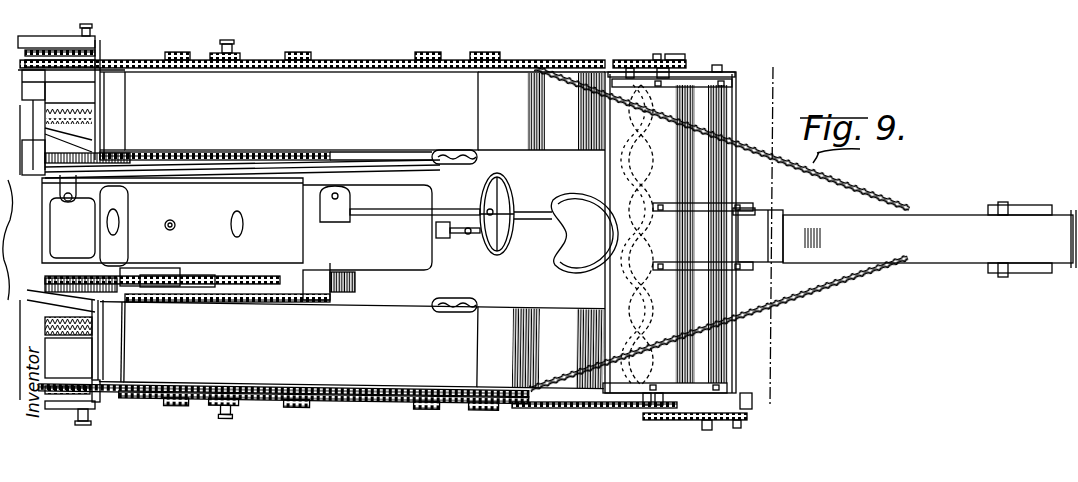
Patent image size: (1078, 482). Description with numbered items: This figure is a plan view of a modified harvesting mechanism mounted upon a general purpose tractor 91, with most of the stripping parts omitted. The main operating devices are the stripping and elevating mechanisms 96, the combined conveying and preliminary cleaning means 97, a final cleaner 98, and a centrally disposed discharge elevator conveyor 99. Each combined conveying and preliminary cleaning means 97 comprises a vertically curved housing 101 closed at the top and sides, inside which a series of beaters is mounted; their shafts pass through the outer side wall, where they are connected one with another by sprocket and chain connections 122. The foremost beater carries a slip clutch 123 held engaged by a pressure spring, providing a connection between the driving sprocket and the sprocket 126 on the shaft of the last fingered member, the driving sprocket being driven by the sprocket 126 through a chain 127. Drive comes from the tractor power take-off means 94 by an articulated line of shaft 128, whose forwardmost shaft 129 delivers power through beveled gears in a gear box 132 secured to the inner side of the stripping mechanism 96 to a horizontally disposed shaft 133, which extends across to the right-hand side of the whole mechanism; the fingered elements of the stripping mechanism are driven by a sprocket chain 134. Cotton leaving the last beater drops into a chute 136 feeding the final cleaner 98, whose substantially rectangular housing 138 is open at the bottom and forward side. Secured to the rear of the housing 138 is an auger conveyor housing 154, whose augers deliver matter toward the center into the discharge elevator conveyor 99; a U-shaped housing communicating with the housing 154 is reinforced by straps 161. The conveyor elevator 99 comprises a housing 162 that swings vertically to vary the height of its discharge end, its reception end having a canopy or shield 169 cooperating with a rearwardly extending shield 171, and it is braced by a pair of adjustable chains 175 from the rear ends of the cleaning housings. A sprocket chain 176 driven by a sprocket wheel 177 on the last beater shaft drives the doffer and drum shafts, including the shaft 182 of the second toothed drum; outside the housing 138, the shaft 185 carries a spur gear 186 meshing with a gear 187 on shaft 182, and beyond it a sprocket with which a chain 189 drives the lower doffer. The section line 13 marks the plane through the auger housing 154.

The section line 13- 13 is at (797, 61).
The general purpose tractor 91 is at (206, 182).
The power take-off means 94 is at (350, 272).
The stripping and elevating mechanisms 96 is at (78, 362).
The combined conveying and preliminary cleaning means 97 is at (362, 84).
The final cleaner 98 is at (738, 132).
The discharge elevator conveyor 99 is at (941, 222).
The vertically curved housing 101 is at (425, 72).
The sprocket and chain connections 122 is at (292, 56).
The slip clutch 123 is at (200, 58).
The sprocket 126 is at (30, 117).
The chain 127 is at (160, 400).
The articulated line of shaft 128 is at (248, 280).
The forwardmost shaft 129 is at (186, 294).
The gear box 132 is at (135, 290).
The horizontally disposed shaft 133 is at (108, 62).
The sprocket chain 134 is at (106, 48).
The chute 136 is at (563, 151).
The rectangular housing 138 is at (699, 112).
The auger conveyor housing 154 is at (723, 207).
The straps 161 is at (694, 262).
The housing 162 is at (950, 266).
The canopy or shield 169 is at (783, 223).
The rearwardly extending shield 171 is at (792, 226).
The chains 175 is at (859, 199).
The sprocket chain 176 is at (575, 405).
The sprocket wheel 177 is at (528, 402).
The shaft 182 is at (630, 60).
The shaft 185 is at (645, 420).
The spur gear 186 is at (680, 61).
The gear 187 is at (622, 62).
The chain 189 is at (652, 60).